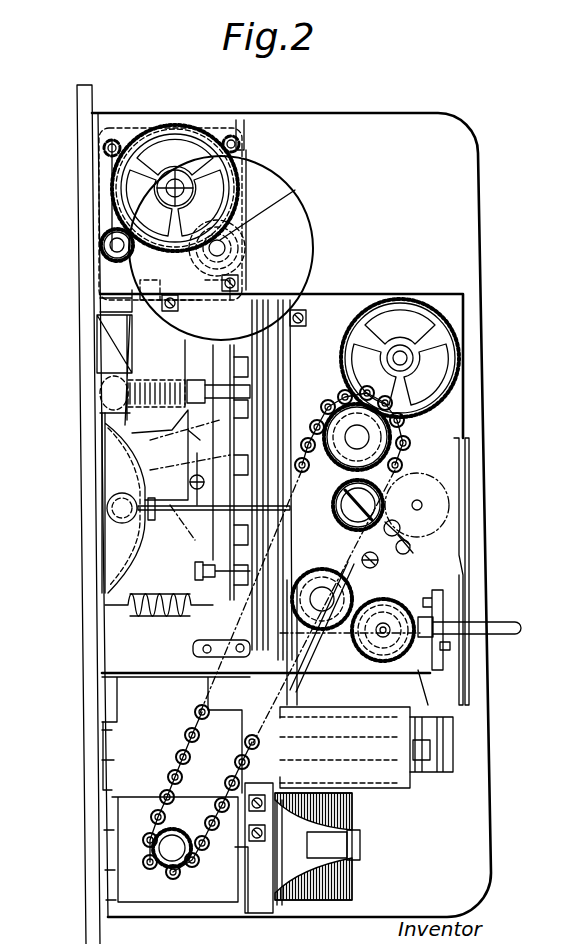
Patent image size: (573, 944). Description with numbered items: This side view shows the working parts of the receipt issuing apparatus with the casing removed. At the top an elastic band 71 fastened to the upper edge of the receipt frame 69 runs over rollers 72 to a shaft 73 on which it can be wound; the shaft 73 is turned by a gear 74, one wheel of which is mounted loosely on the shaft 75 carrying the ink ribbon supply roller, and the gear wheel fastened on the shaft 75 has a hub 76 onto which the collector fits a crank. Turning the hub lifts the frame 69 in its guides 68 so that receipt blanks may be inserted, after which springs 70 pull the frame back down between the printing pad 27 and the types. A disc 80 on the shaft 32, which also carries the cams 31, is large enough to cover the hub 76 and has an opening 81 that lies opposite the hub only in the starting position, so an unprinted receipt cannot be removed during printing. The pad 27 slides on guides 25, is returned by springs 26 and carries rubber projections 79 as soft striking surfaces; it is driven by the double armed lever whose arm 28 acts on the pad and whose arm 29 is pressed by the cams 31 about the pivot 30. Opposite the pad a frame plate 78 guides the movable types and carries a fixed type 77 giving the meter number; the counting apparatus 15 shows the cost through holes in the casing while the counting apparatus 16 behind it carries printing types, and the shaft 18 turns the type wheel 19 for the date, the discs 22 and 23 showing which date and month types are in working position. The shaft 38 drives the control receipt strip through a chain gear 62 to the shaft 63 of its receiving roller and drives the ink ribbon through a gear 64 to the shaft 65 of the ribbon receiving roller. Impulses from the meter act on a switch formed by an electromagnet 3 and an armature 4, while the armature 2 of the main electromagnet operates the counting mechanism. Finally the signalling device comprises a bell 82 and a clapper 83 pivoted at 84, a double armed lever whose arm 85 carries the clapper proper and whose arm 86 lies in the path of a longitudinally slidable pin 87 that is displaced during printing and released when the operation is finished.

The armature 2 is at (458, 745).
The electromagnet 3 is at (312, 897).
The armature 4 is at (360, 843).
The counting apparatus 15 is at (417, 505).
The counting apparatus 16 is at (342, 505).
The shaft 18 is at (510, 622).
The type wheel 19 is at (330, 670).
The disc 22 is at (465, 600).
The disc 23 is at (462, 570).
The guides 25 is at (205, 380).
The springs 26 is at (159, 617).
The pad 27 is at (230, 548).
The lever arm 28 is at (150, 462).
The lever arm 29 is at (138, 330).
The pivot 30 is at (135, 365).
The cams 31 is at (228, 248).
The shaft 32 is at (298, 188).
The shaft 38 is at (340, 410).
The chain gear 62 is at (410, 432).
The shaft 63 is at (160, 850).
The gear 64 is at (468, 362).
The shaft 65 is at (401, 350).
The guides 68 is at (293, 345).
The frame 69 is at (244, 436).
The springs 70 is at (210, 641).
The band 71 is at (245, 160).
The rollers 72 is at (112, 135).
The shaft 73 is at (100, 243).
The gear 74 is at (105, 240).
The shaft 75 is at (175, 168).
The hub 76 is at (120, 165).
The fixed type 77 is at (290, 362).
The frame plate 78 is at (285, 425).
The projections 79 is at (166, 446).
The disc 80 is at (310, 207).
The opening 81 is at (175, 188).
The bell 82 is at (100, 545).
The clapper 83 is at (112, 492).
The pivot 84 is at (230, 525).
The arm 85 is at (170, 518).
The arm 86 is at (336, 510).
The pin 87 is at (402, 478).